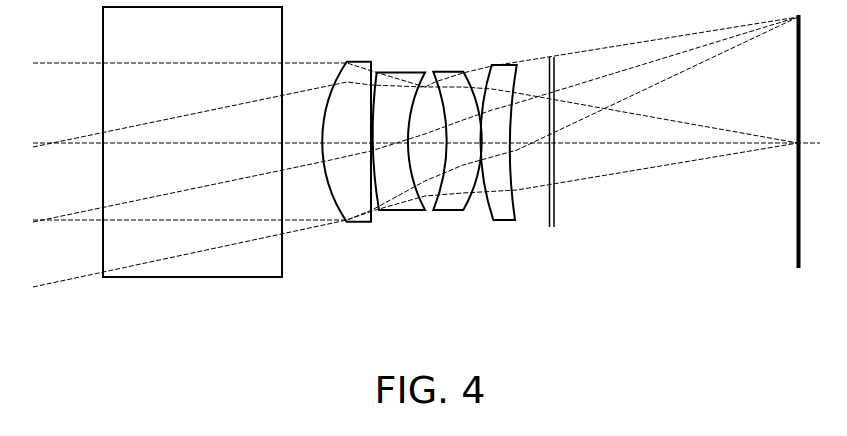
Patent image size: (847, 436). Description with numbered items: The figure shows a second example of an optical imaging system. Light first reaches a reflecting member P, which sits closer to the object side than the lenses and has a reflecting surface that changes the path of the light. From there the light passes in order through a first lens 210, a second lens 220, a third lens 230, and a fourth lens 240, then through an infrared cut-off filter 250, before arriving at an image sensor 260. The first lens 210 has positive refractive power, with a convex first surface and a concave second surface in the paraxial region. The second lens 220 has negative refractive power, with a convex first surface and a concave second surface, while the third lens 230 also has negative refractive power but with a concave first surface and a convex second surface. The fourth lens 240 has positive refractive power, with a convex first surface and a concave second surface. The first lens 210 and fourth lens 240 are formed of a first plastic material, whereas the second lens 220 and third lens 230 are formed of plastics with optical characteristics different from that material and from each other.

The reflecting member P is at (199, 268).
The first lens 210 is at (360, 222).
The second lens 220 is at (408, 212).
The third lens 230 is at (452, 212).
The fourth lens 240 is at (505, 221).
The infrared cut-off filter 250 is at (555, 228).
The image sensor 260 is at (797, 238).